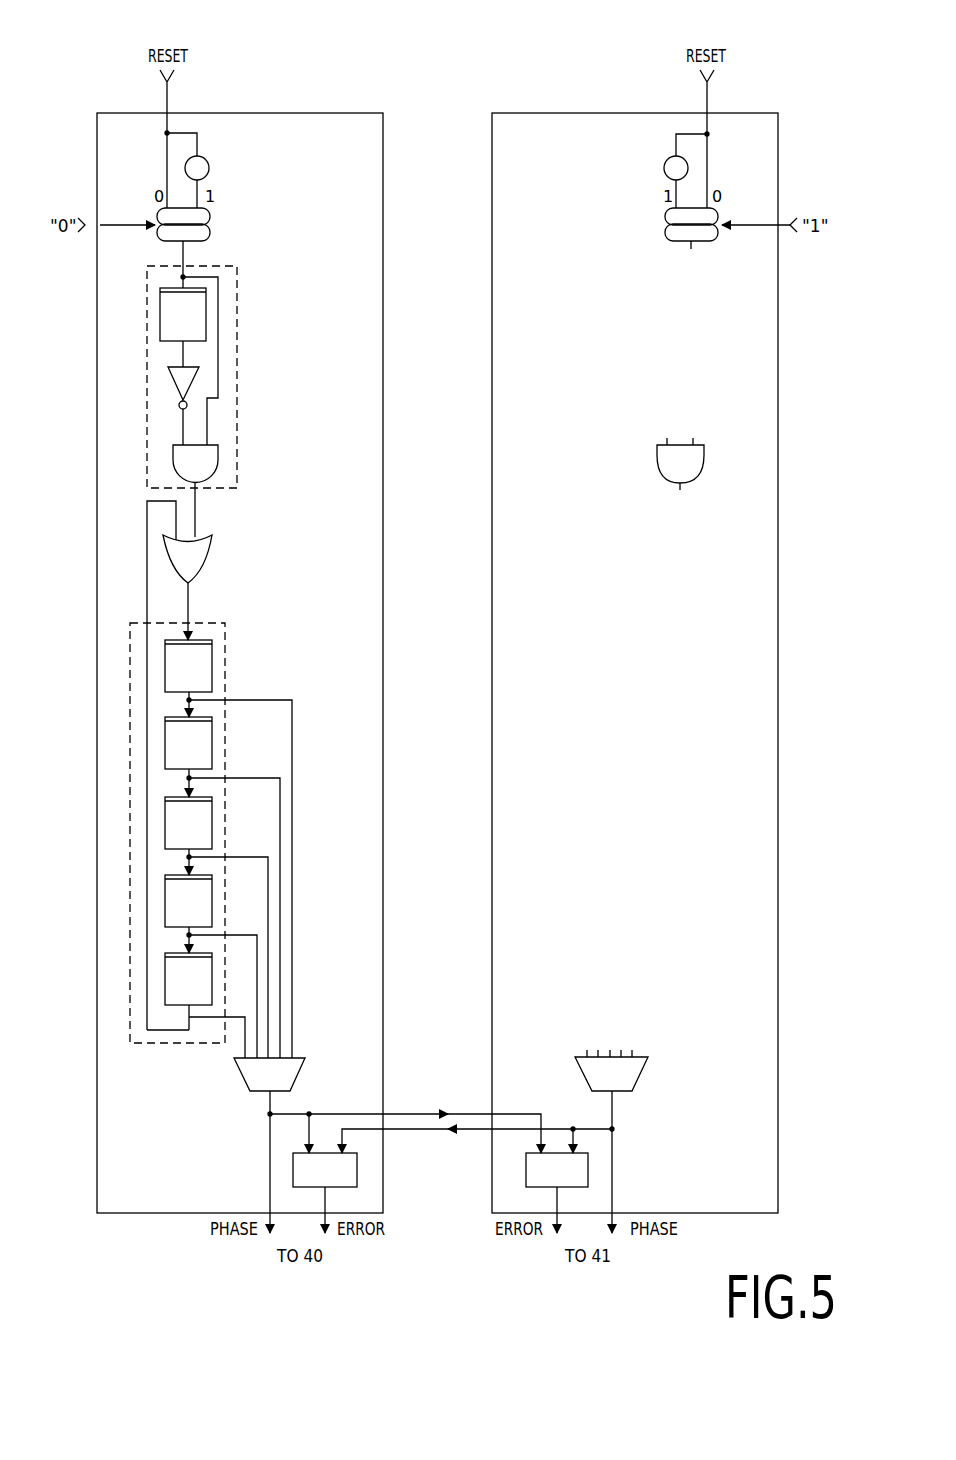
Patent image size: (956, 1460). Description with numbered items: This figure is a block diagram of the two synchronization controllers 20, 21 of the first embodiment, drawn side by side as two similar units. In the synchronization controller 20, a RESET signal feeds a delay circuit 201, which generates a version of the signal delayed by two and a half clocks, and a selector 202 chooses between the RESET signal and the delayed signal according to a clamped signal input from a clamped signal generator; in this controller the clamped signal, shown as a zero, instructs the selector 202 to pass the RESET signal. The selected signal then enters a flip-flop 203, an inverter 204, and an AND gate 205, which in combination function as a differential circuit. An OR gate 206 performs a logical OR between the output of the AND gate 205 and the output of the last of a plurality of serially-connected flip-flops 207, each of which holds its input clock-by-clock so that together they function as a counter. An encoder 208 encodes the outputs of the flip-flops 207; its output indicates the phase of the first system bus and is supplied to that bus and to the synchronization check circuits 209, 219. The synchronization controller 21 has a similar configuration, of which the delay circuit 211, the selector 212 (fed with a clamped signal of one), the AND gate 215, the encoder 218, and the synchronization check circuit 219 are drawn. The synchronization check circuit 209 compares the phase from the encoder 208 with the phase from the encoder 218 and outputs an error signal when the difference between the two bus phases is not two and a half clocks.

The synchronization controller 20 is at (303, 113).
The synchronization controller 21 is at (566, 113).
The delay circuit 201 is at (209, 168).
The selector 202 is at (210, 216).
The flip-flop 203 is at (160, 306).
The inverter 204 is at (168, 380).
The AND gate 205 is at (173, 462).
The OR gate 206 is at (210, 556).
The serially-connected flip-flops 207 is at (212, 656).
The encoder 208 is at (240, 1074).
The synchronization check circuit 209 is at (357, 1165).
The delay circuit 211 is at (664, 169).
The selector 212 is at (665, 216).
The AND gate 215 is at (704, 458).
The encoder 218 is at (636, 1075).
The synchronization check circuit 219 is at (526, 1166).